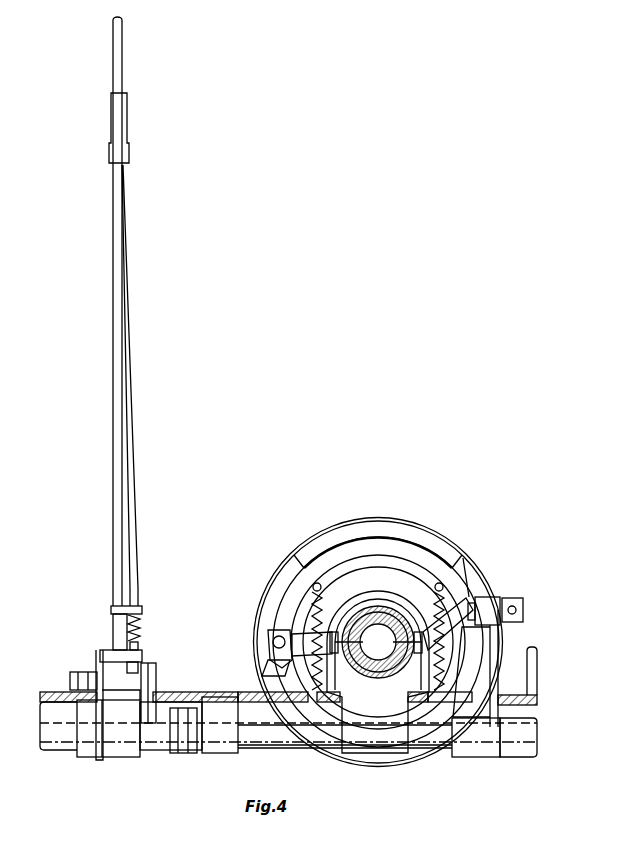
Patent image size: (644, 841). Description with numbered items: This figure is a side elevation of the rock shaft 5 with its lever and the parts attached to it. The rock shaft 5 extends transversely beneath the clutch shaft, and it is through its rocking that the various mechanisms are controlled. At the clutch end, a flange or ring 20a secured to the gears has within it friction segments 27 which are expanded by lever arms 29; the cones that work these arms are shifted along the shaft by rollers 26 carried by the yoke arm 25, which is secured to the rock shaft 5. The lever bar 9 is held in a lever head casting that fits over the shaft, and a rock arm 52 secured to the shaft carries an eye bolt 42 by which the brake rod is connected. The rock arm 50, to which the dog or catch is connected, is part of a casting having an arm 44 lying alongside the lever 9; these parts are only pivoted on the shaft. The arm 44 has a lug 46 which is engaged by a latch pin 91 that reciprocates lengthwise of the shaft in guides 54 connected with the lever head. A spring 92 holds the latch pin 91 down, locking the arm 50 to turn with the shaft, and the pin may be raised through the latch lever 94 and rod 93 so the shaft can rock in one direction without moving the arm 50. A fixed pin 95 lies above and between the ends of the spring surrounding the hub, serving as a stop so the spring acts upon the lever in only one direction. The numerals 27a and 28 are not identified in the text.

The bar of the lever 9 is at (113, 378).
The rod 93 is at (130, 420).
The latch lever 94 is at (129, 118).
The guides 54 is at (141, 610).
The latch pin 91 is at (136, 627).
The spring 92 is at (139, 640).
The rock arm 52 is at (97, 655).
The pin 95 is at (92, 673).
The lug 46 is at (139, 667).
The arm 44 is at (150, 688).
The rock arm 50 is at (187, 750).
The rock shaft 5 is at (266, 742).
The friction segments 27 is at (283, 584).
The flange or ring 20a is at (285, 563).
The springs 27a is at (320, 614).
The pivot pin 28 is at (272, 642).
The lever arms 29 is at (308, 636).
The yoke arm 25 is at (378, 672).
The rollers 26 is at (378, 642).
The eye bolt 42 is at (514, 603).